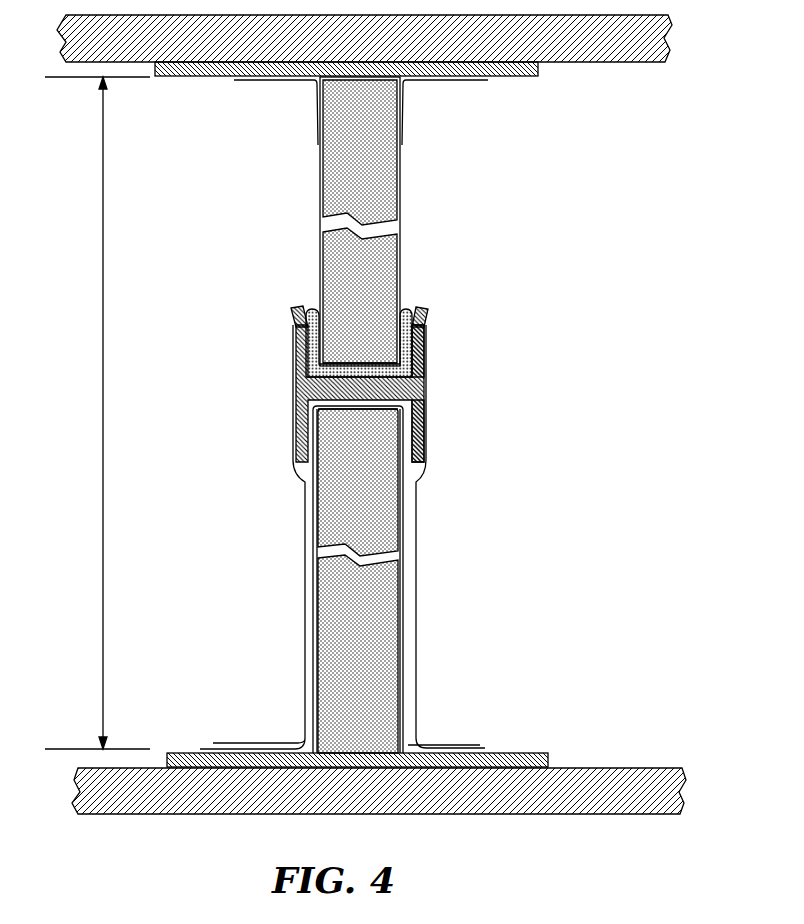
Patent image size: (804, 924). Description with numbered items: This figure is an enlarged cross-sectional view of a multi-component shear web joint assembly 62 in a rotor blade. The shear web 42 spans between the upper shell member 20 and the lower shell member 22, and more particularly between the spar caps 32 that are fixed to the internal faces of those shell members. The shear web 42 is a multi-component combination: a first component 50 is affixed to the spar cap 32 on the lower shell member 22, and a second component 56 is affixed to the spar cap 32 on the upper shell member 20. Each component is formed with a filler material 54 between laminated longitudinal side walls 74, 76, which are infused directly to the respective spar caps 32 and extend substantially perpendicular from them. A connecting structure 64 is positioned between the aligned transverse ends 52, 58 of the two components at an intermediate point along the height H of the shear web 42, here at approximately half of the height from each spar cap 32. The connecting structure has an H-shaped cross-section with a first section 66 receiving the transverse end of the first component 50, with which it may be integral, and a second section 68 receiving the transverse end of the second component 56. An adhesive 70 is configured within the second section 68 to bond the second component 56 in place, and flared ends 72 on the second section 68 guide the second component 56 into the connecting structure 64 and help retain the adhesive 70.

The upper shell member 20 is at (605, 55).
The lower shell member 22 is at (652, 780).
The spar cap 32 is at (512, 72).
The shear web 42 is at (238, 238).
The first component 50 is at (404, 669).
The transverse end 52 is at (378, 366).
The filler material 54 is at (373, 165).
The second component 56 is at (388, 190).
The transverse end 58 is at (383, 411).
The joint assembly 62 is at (250, 358).
The connecting structure 64 is at (304, 387).
The first section 66 is at (418, 440).
The second section 68 is at (412, 350).
The adhesive 70 is at (408, 310).
The flared end 72 is at (298, 306).
The longitudinal side wall 74 is at (318, 143).
The longitudinal side wall 76 is at (315, 593).
The height H is at (97, 413).